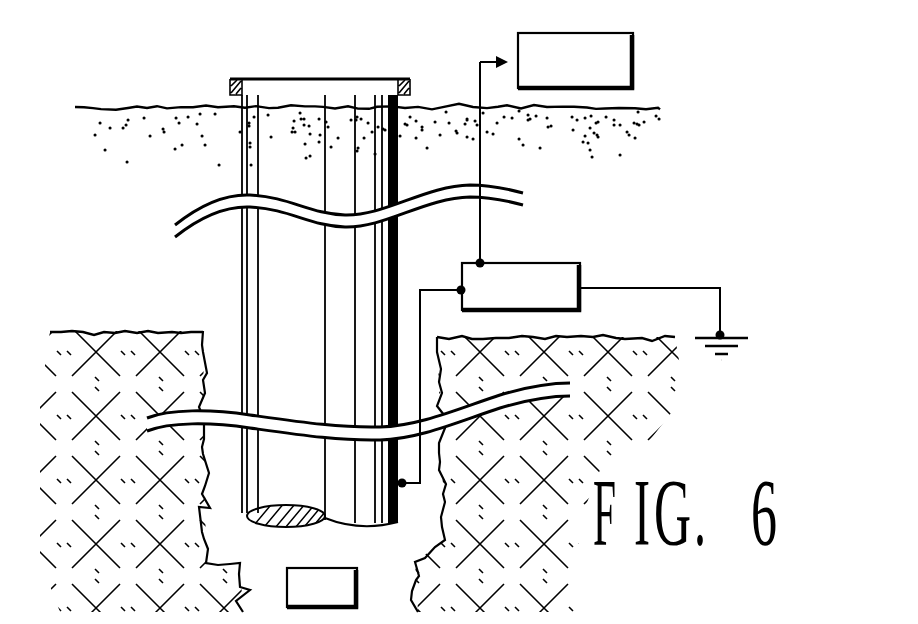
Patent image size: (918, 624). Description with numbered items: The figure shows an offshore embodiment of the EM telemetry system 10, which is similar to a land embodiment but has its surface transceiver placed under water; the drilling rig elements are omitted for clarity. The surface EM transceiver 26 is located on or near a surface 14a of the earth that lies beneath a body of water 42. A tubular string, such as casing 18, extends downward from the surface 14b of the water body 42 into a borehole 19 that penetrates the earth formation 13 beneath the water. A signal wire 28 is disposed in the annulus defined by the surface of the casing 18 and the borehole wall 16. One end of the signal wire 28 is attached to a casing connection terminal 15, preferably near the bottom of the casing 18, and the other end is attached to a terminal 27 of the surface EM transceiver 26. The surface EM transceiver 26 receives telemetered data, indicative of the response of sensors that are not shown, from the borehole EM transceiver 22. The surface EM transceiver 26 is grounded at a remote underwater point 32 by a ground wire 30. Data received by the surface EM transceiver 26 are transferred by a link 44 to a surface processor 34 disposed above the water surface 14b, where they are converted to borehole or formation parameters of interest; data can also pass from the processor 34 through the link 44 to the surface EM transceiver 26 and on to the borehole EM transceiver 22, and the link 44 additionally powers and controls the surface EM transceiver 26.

The EM telemetry system 10 is at (430, 58).
The earth formation 13 is at (153, 388).
The surface 14a is at (137, 331).
The surface of the water body 14b is at (176, 104).
The casing connection terminal 15 is at (402, 485).
The borehole wall 16 is at (187, 460).
The casing 18 is at (255, 262).
The borehole 19 is at (220, 513).
The borehole EM transceiver 22 is at (343, 574).
The surface EM transceiver 26 is at (565, 265).
The terminal 27 is at (461, 290).
The signal wire 28 is at (437, 378).
The ground wire 30 is at (660, 288).
The remote underwater point 32 is at (728, 332).
The surface processor 34 is at (622, 53).
The body of water 42 is at (164, 181).
The link 44 is at (480, 166).